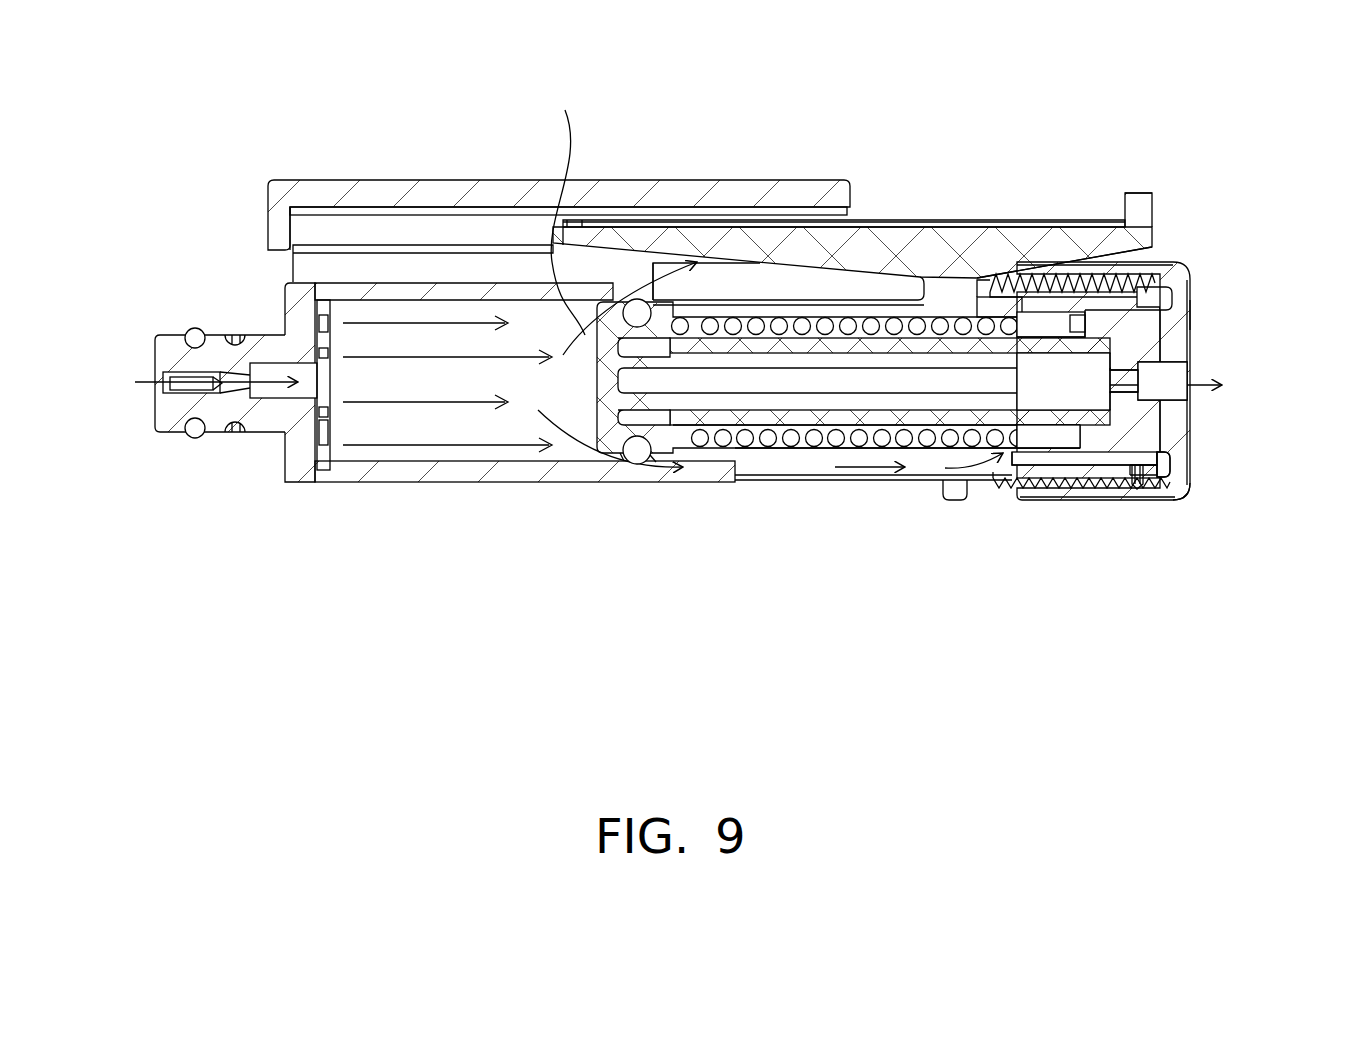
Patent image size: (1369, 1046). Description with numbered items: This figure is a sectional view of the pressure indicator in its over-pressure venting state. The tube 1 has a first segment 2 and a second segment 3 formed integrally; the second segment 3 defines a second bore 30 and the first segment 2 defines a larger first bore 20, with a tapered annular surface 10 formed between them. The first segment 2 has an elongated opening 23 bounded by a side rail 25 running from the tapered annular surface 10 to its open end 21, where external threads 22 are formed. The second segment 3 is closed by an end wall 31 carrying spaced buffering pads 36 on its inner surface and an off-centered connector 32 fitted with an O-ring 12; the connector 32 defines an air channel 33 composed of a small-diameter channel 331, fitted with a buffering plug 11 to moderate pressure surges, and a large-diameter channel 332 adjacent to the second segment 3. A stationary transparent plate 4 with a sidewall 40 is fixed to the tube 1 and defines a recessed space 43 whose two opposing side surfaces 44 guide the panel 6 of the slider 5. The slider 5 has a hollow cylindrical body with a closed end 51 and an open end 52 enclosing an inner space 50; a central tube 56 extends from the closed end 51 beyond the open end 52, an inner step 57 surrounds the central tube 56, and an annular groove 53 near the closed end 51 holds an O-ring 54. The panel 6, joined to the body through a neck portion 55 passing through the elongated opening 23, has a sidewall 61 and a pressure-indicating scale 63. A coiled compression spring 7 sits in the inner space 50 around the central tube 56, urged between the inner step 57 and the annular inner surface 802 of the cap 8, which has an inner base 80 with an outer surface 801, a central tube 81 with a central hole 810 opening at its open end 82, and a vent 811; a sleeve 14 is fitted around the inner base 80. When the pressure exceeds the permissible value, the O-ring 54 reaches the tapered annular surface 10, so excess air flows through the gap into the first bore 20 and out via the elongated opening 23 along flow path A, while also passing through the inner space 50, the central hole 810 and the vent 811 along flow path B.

The tube 1 is at (521, 478).
The first segment 2 is at (937, 480).
The second segment 3 is at (440, 470).
The stationary transparent plate 4 is at (437, 181).
The slider 5 is at (846, 452).
The panel 6 is at (1062, 248).
The coiled compression spring 7 is at (804, 444).
The cap 8 is at (1168, 483).
The tapered annular surface 10 is at (650, 467).
The buffering plug 11 is at (167, 372).
The O-ring 12 is at (196, 335).
The sleeve 14 is at (1116, 460).
The first bore 20 is at (1022, 500).
The open end 21 is at (1130, 478).
The external threads 22 is at (1070, 490).
The elongated opening 23 is at (750, 287).
The side rail 25 is at (677, 267).
The second bore 30 is at (410, 432).
The end wall 31 is at (295, 458).
The connector 32 is at (173, 413).
The air channel 33 is at (162, 393).
The buffering pads 36 is at (330, 300).
The sidewall 40 is at (276, 240).
The recessed space 43 is at (853, 210).
The side surfaces 44 is at (477, 228).
The inner space 50 is at (815, 318).
The closed end 51 is at (602, 435).
The open end 52 is at (985, 462).
The annular groove 53 is at (618, 462).
The O-ring 54 is at (637, 455).
The neck portion 55 is at (962, 280).
The central tube 56 is at (765, 402).
The inner step 57 is at (687, 316).
The sidewall 61 is at (1142, 212).
The pressure-indicating scale 63 is at (946, 227).
The inner base 80 is at (1152, 425).
The central tube 81 is at (900, 419).
The open end 82 is at (700, 443).
The small-diameter channel 331 is at (217, 394).
The large-diameter channel 332 is at (287, 397).
The outer surface 801 is at (1190, 320).
The annular inner surface 802 is at (1060, 295).
The central hole 810 is at (1100, 455).
The vent 811 is at (1125, 377).
The flow path A is at (568, 207).
The flow path B is at (1212, 388).